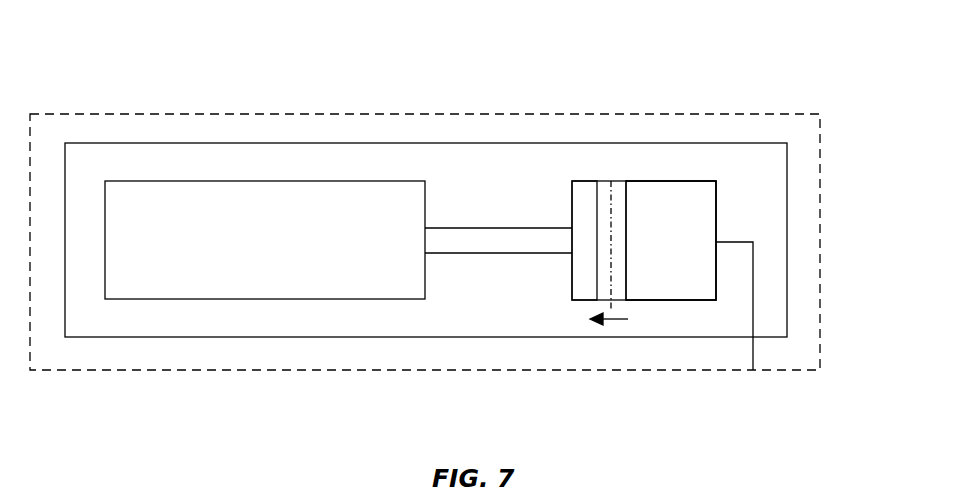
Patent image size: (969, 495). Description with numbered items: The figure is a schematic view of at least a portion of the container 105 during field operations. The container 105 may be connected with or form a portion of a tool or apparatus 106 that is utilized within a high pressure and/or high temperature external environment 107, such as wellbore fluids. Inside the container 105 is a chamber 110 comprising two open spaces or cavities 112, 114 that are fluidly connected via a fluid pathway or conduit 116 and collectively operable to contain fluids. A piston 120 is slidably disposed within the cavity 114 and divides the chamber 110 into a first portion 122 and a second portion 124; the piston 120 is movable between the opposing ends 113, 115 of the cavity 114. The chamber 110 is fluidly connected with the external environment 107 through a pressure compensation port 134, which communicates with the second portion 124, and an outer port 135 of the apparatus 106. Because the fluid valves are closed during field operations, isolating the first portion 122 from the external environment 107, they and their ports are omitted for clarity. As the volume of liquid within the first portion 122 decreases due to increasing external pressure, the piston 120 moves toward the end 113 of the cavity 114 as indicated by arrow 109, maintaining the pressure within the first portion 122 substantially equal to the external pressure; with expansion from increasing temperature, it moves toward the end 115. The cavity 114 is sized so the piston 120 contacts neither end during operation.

The container 105 is at (106, 132).
The apparatus 106 is at (113, 371).
The external environment 107 is at (803, 421).
The arrow 109 is at (617, 322).
The chamber 110 is at (265, 248).
The cavity 112 is at (265, 248).
The end of the cavity 113 is at (571, 203).
The cavity 114 is at (639, 249).
The end of the cavity 115 is at (716, 205).
The conduit 116 is at (505, 228).
The piston 120 is at (618, 202).
The first portion 122 is at (263, 280).
The second portion 124 is at (668, 282).
The pressure compensation port 134 is at (753, 316).
The outer port 135 is at (753, 358).